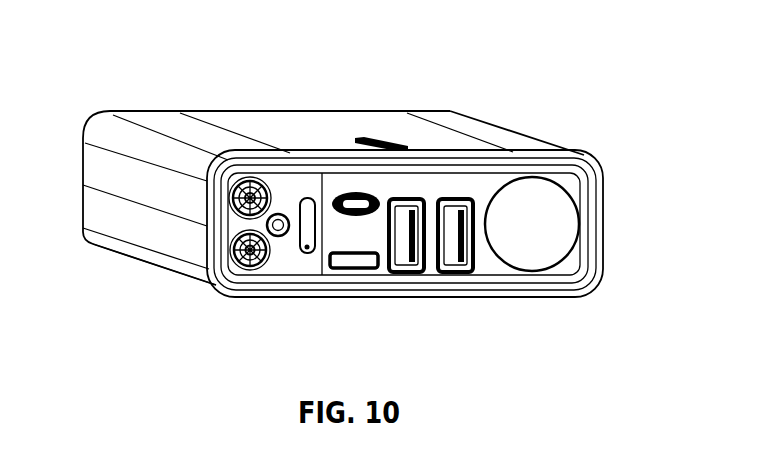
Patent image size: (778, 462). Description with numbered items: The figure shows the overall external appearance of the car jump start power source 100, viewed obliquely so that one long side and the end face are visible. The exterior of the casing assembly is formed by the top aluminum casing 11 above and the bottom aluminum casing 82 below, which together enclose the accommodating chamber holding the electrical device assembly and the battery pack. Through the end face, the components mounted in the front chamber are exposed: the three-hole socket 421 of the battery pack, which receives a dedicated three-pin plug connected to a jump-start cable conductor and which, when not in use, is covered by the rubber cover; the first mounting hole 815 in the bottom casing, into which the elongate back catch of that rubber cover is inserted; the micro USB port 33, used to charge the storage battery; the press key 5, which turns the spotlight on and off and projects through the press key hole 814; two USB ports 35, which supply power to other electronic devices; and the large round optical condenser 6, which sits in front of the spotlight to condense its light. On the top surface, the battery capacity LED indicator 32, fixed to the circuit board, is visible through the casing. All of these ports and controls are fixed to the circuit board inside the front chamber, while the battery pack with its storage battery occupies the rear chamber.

The car jump start power source 100 is at (532, 79).
The top aluminum casing 11 is at (128, 143).
The bottom aluminum casing 82 is at (125, 247).
The battery capacity LED indicator 32 is at (380, 141).
The micro USB port 33 is at (338, 195).
The three-hole socket 421 is at (260, 270).
The first mounting hole 815 is at (307, 250).
The press key 5 is at (343, 268).
The press key hole 814 is at (354, 260).
The USB port 35 is at (407, 273).
The optical condenser 6 is at (555, 246).